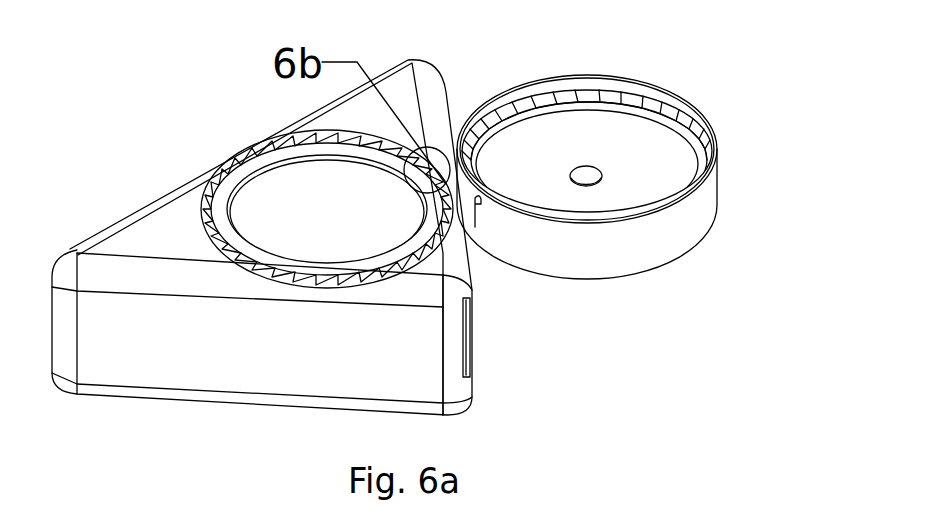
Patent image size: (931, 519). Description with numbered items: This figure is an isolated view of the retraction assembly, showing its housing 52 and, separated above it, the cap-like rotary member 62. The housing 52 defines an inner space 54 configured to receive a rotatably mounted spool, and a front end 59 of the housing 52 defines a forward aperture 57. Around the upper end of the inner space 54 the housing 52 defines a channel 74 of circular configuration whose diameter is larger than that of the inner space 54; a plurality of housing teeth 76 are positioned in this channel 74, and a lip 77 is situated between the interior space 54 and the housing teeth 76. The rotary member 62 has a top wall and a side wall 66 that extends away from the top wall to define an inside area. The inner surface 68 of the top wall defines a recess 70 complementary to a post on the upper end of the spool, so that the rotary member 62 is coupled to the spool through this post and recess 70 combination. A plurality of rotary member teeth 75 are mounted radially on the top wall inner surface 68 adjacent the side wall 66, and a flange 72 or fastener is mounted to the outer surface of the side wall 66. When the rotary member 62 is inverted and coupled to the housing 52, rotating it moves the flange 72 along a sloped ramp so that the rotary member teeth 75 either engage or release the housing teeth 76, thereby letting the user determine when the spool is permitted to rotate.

The housing 52 is at (127, 366).
The inner space 54 is at (277, 181).
The forward aperture 57 is at (470, 363).
The front end 59 is at (467, 393).
The rotary member 62 is at (647, 278).
The side wall 66 is at (708, 206).
The inner surface of the top wall 68 is at (662, 143).
The recess 70 is at (585, 172).
The flange 72 is at (476, 228).
The channel 74 is at (203, 190).
The rotary member teeth 75 is at (520, 102).
The housing teeth 76 is at (205, 215).
The lip 77 is at (238, 177).